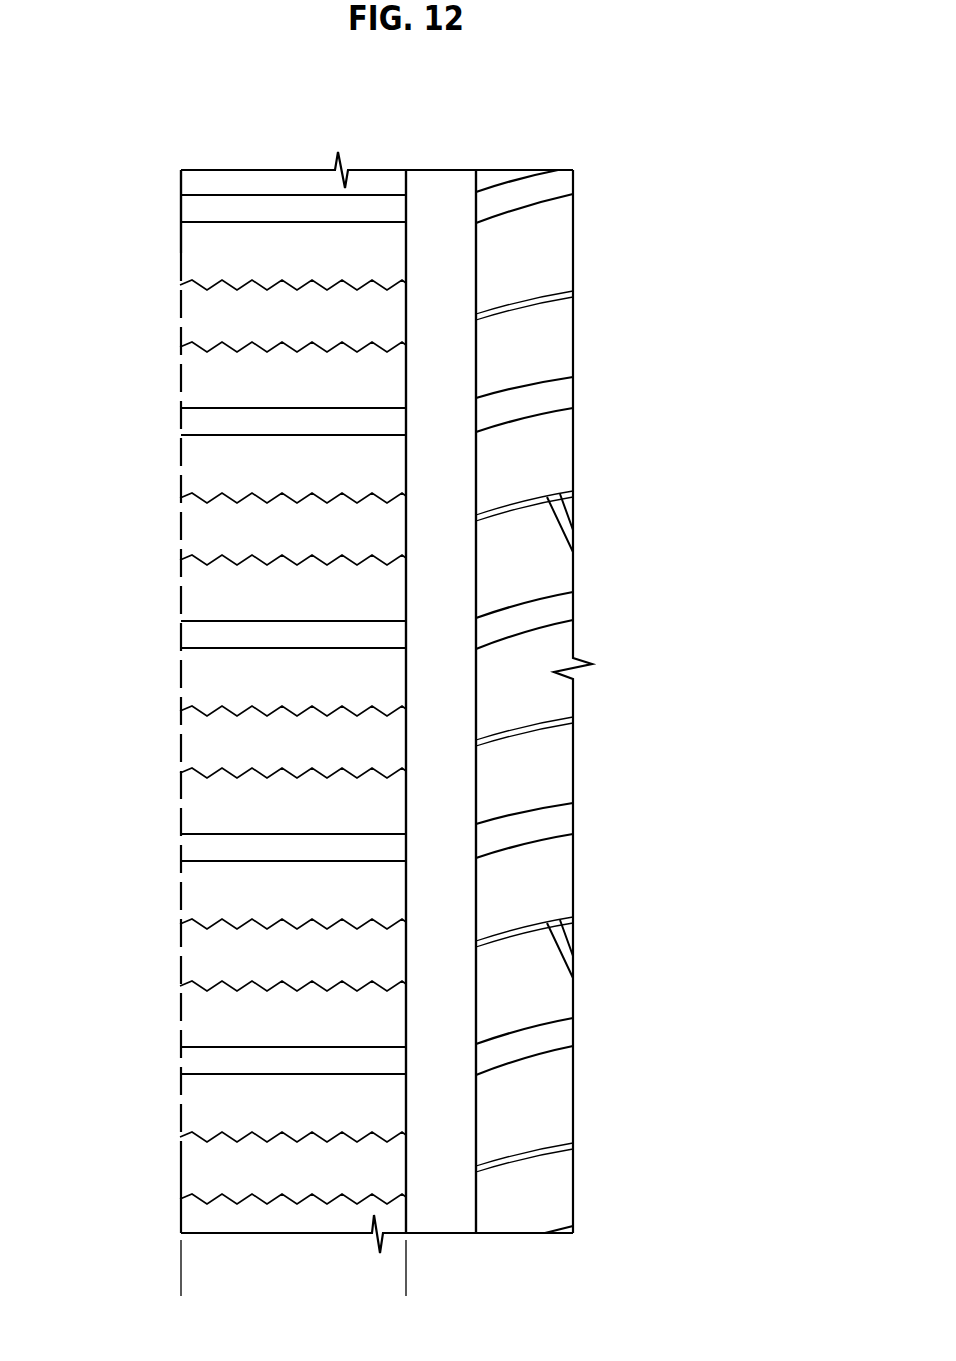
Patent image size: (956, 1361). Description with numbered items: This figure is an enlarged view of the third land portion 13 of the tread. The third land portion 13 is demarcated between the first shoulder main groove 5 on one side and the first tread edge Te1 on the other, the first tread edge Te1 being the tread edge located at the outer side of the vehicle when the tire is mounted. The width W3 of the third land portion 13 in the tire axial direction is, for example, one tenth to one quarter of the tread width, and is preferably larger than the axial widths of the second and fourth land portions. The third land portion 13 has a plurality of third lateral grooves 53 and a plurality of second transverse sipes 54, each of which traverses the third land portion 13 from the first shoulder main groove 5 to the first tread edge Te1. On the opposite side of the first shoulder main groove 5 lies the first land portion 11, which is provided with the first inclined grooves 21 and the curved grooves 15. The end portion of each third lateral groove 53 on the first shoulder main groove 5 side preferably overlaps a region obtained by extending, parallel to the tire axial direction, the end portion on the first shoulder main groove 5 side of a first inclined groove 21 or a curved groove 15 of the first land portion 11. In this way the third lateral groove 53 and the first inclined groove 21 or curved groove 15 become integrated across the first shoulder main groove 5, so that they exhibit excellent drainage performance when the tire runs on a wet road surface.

The third land portion 13 is at (282, 252).
The first shoulder main groove 5 is at (440, 222).
The first land portion 11 is at (515, 251).
The curved groove 15 is at (513, 411).
The first inclined groove 21 is at (517, 622).
The third lateral groove 53 is at (280, 424).
The second transverse sipe 54 is at (244, 346).
The first tread edge Te1 is at (181, 238).
The width of the third land portion W3 is at (406, 1288).